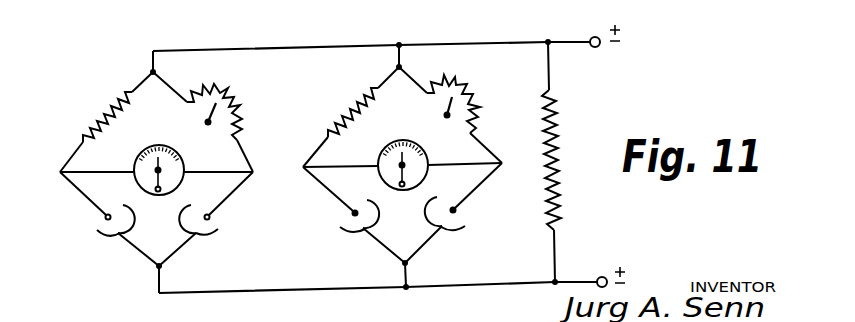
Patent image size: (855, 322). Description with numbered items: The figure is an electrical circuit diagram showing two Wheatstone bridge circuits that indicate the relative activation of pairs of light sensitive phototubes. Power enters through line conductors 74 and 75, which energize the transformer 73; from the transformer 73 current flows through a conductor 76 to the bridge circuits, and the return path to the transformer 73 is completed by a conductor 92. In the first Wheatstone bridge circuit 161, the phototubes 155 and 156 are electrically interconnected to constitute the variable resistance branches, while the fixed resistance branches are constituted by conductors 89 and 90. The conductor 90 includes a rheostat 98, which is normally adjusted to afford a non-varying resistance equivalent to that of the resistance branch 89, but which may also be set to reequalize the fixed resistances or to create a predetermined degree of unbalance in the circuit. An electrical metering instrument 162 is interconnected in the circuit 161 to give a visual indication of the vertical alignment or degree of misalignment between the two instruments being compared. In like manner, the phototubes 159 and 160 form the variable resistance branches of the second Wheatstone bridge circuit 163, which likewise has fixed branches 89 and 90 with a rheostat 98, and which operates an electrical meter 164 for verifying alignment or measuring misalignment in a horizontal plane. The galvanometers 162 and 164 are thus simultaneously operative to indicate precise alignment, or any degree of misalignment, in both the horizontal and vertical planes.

The transformer 73 is at (563, 151).
The line conductor 74 is at (563, 40).
The line conductor 75 is at (574, 281).
The conductor 76 is at (489, 285).
The conductor 89 is at (86, 136).
The conductor 90 is at (245, 118).
The conductor 92 is at (470, 44).
The rheostat 98 is at (210, 130).
The phototube 155 is at (97, 232).
The phototube 156 is at (204, 236).
The phototube 159 is at (360, 232).
The phototube 160 is at (453, 234).
The Wheatstone bridge circuit 161 is at (92, 106).
The electrical metering instrument 162 is at (177, 136).
The Wheatstone bridge circuit 163 is at (330, 96).
The electrical meter 164 is at (415, 181).